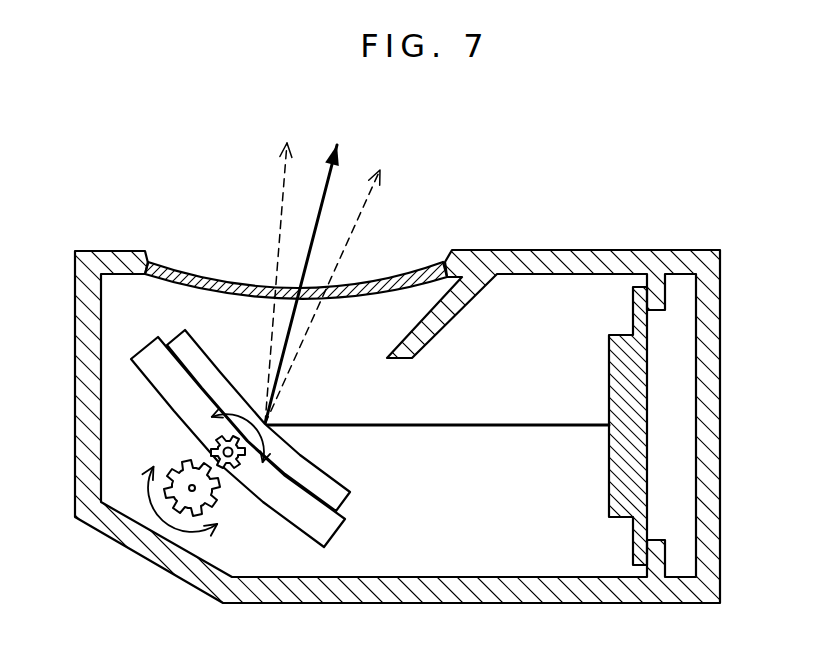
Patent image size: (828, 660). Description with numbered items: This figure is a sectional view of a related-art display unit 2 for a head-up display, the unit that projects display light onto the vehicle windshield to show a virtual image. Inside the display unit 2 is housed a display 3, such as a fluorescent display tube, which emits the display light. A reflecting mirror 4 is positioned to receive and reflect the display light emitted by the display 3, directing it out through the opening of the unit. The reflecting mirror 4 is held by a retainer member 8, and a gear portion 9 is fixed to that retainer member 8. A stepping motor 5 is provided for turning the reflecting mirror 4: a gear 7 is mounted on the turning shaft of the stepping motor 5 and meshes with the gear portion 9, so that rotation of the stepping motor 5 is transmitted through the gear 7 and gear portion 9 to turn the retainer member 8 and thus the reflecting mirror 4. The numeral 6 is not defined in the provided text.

The display unit 2 is at (622, 198).
The display 3 is at (611, 484).
The reflecting mirror 4 is at (352, 495).
The stepping motor 5 is at (152, 502).
The housing 6 is at (513, 598).
The gear 7 is at (185, 475).
The retainer member 8 is at (153, 357).
The gear portion 9 is at (233, 468).